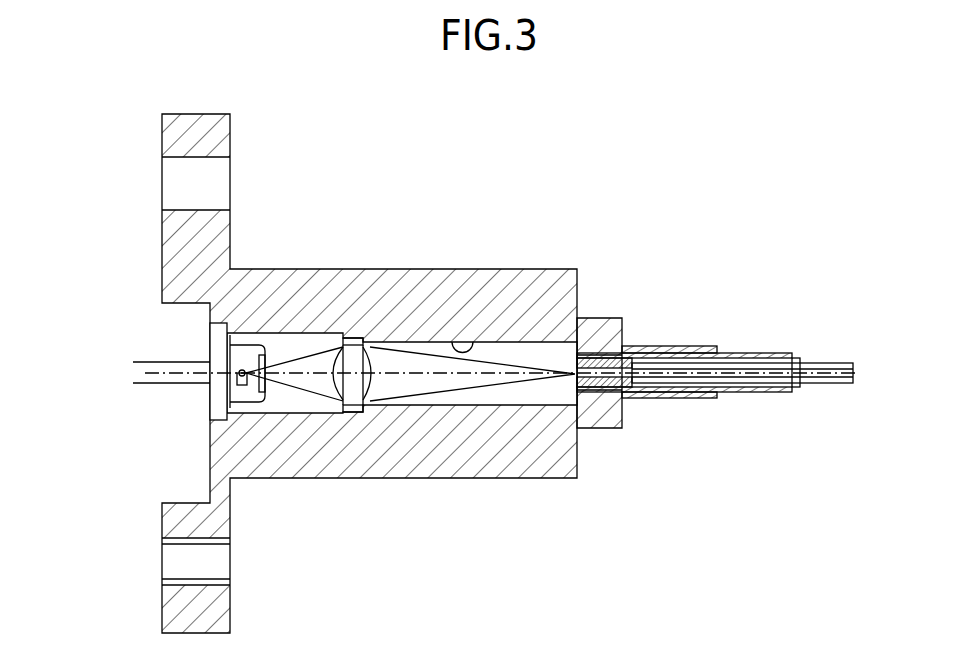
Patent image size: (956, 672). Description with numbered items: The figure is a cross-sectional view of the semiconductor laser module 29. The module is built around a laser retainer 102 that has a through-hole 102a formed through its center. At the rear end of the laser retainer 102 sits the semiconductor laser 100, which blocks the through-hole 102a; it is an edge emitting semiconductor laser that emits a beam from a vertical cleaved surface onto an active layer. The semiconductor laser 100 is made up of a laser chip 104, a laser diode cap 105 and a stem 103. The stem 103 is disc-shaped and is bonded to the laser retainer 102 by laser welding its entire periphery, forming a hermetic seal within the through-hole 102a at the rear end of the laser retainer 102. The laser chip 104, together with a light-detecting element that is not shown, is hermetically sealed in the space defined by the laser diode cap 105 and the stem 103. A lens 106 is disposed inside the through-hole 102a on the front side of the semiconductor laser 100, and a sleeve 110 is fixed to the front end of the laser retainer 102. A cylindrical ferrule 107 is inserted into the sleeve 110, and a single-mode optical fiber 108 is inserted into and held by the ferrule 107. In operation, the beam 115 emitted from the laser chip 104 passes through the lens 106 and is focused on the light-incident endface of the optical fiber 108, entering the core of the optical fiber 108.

The semiconductor laser module 29 is at (652, 502).
The semiconductor laser 100 is at (232, 420).
The laser retainer 102 is at (378, 293).
The through-hole 102a is at (475, 342).
The stem 103 is at (213, 355).
The laser chip 104 is at (243, 367).
The laser diode cap 105 is at (258, 407).
The lens 106 is at (365, 346).
The ferrule 107 is at (733, 353).
The optical fiber 108 is at (628, 344).
The sleeve 110 is at (597, 330).
The beam 115 is at (313, 363).